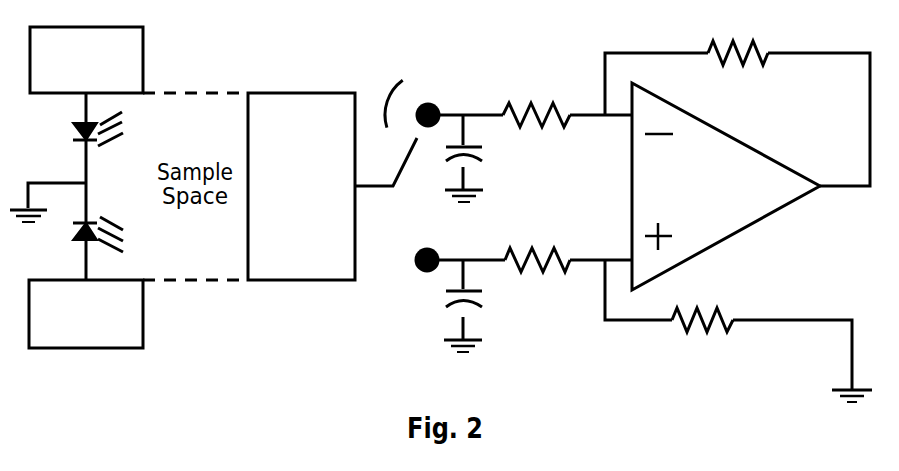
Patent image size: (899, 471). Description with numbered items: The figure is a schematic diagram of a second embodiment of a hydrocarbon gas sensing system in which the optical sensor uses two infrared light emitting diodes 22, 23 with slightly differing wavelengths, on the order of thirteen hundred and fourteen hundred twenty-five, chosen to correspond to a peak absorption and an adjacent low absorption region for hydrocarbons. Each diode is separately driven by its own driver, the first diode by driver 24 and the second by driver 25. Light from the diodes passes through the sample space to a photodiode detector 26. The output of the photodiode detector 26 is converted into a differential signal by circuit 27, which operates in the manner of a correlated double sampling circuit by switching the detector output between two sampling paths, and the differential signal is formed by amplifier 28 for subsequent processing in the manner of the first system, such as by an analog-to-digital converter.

The infrared light emitting diode 22 is at (114, 129).
The infrared light emitting diode 23 is at (115, 236).
The driver 24 is at (86, 60).
The driver 25 is at (86, 314).
The photodiode detector 26 is at (301, 186).
The circuit 27 is at (398, 172).
The amplifier 28 is at (726, 186).